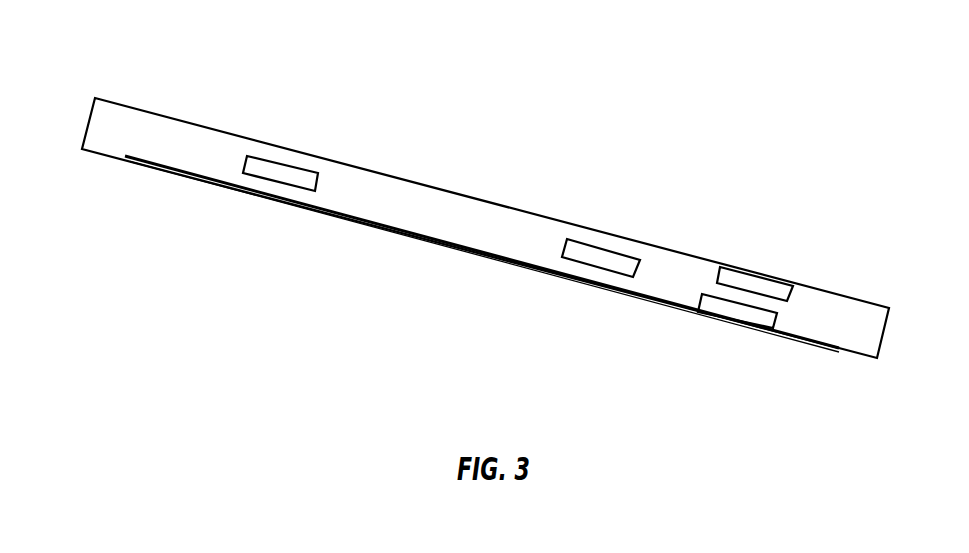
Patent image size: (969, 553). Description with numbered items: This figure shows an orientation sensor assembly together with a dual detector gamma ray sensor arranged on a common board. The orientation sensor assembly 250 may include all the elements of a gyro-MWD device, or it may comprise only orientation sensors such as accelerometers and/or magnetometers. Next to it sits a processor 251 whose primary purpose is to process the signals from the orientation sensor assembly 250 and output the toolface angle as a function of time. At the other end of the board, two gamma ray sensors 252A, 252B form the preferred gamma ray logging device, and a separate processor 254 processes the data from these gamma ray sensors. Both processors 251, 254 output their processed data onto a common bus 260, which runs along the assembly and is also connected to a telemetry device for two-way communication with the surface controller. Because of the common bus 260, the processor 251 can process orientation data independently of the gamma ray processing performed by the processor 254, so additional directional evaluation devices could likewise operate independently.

The orientation sensor assembly 250 is at (132, 103).
The processor 251 is at (302, 175).
The gamma ray sensor 252A is at (767, 280).
The gamma ray sensor 252B is at (757, 315).
The processor 254 is at (600, 262).
The common bus 260 is at (402, 229).